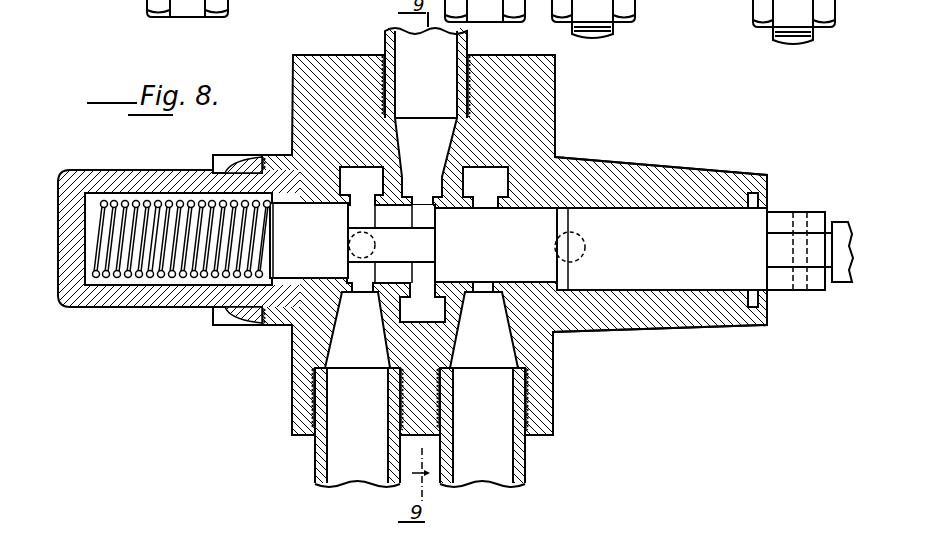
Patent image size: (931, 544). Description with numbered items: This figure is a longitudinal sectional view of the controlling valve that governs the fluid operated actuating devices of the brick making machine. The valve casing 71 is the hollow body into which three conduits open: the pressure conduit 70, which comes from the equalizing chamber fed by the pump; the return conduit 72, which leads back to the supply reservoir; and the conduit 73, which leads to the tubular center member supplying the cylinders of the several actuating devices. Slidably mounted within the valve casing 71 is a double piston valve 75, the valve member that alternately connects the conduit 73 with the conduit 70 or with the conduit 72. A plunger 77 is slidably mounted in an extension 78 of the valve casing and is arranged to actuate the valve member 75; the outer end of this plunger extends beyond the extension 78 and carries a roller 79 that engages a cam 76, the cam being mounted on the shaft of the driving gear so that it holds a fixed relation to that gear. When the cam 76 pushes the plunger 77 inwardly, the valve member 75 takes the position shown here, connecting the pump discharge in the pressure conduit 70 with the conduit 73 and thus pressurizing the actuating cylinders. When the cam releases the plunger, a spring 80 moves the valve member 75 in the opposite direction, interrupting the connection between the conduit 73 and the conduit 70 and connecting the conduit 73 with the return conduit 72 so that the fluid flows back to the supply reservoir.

The pressure conduit 70 is at (357, 427).
The valve casing 71 is at (557, 152).
The return conduit 72 is at (495, 470).
The conduit 73 is at (426, 73).
The double piston valve 75 is at (413, 243).
The cam 76 is at (842, 285).
The plunger 77 is at (661, 249).
The extension 78 is at (687, 197).
The roller 79 is at (783, 243).
The spring 80 is at (160, 273).